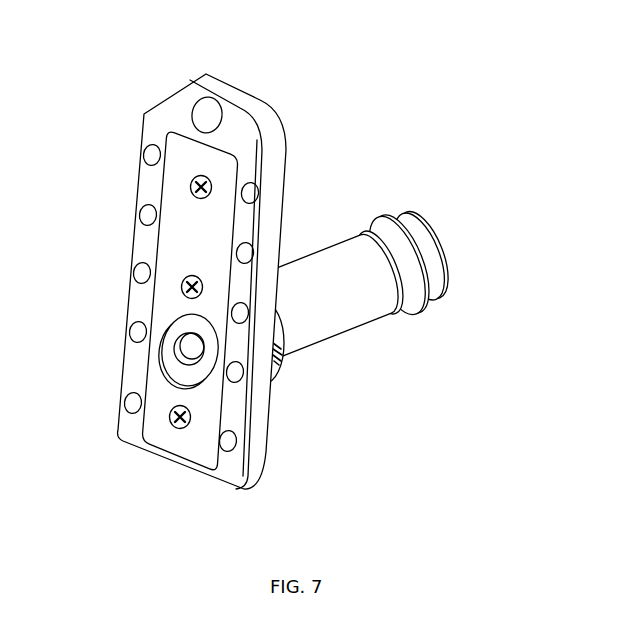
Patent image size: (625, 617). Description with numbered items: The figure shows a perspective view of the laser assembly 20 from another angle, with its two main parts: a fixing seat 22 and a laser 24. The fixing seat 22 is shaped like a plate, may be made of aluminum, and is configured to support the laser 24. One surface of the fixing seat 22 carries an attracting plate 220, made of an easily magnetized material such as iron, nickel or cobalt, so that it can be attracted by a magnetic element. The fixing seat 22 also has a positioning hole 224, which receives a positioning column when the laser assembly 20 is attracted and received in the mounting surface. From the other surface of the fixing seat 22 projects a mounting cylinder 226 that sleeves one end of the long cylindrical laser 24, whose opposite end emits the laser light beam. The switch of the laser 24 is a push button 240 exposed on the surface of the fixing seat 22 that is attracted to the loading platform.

The laser assembly 20 is at (446, 54).
The fixing seat 22 is at (252, 458).
The laser 24 is at (333, 320).
The attracting plate 220 is at (178, 253).
The positioning hole 224 is at (200, 112).
The mounting cylinder 226 is at (274, 366).
The push button 240 is at (192, 354).